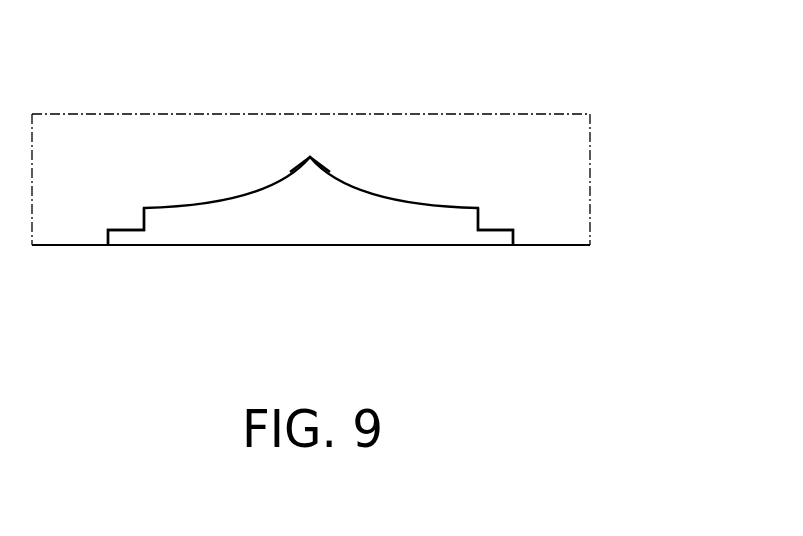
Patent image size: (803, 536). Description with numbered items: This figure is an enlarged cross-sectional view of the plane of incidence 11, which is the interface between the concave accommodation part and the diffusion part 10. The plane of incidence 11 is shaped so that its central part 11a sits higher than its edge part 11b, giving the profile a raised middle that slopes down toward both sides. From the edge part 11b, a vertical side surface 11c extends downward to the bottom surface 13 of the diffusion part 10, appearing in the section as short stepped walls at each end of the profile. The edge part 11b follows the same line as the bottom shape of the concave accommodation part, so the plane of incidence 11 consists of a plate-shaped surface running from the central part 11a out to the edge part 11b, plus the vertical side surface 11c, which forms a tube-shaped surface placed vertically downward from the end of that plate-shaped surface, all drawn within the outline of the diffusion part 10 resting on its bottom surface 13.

The diffusion part 10 is at (572, 171).
The plane of incidence 11 is at (216, 207).
The central part 11a is at (310, 157).
The edge part 11b is at (144, 208).
The vertical side surface 11c is at (480, 219).
The bottom surface 13 is at (70, 246).